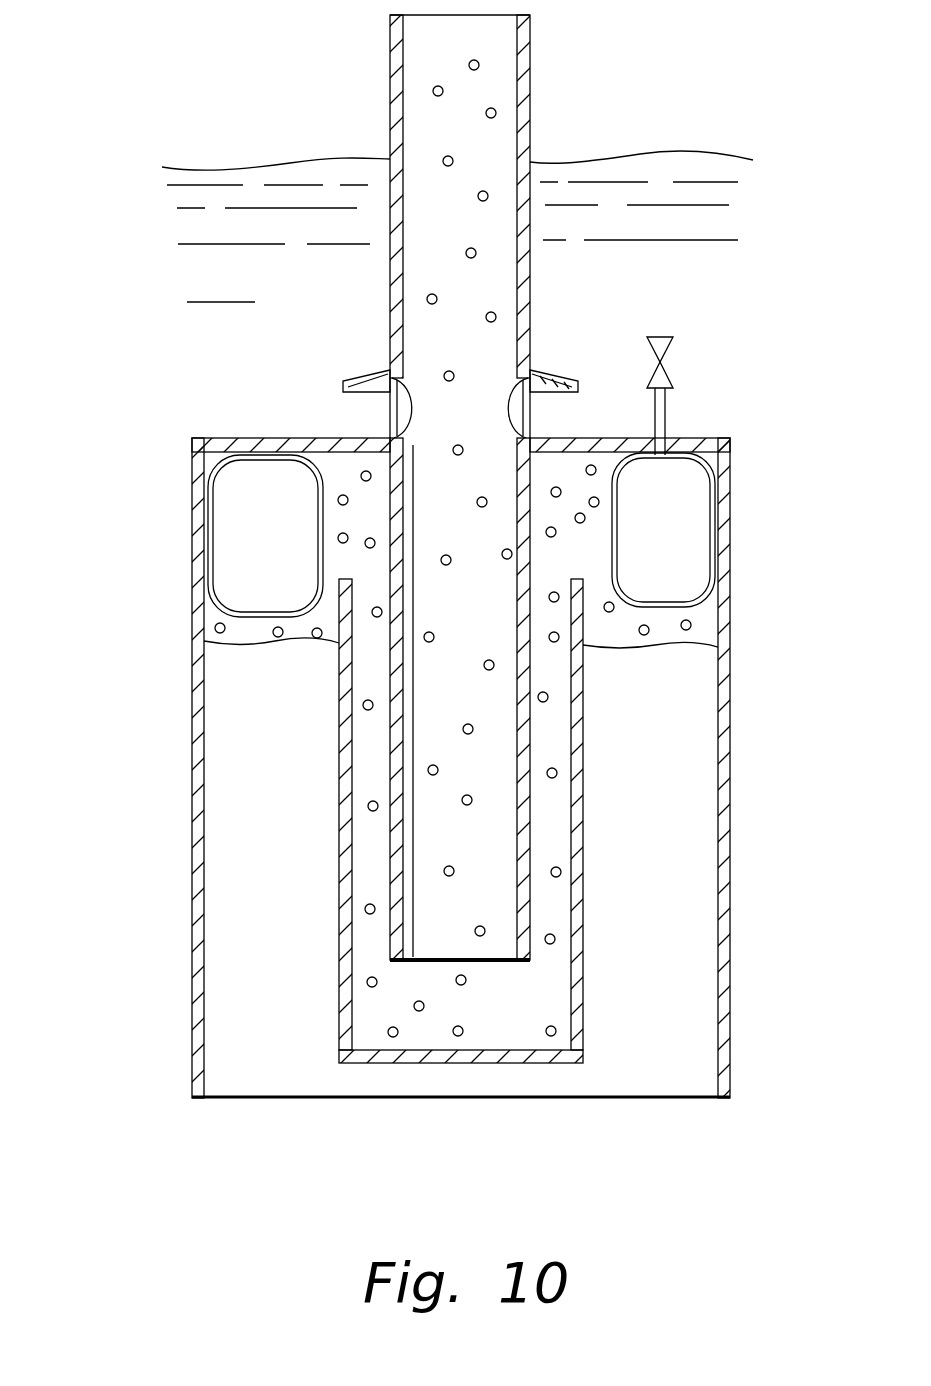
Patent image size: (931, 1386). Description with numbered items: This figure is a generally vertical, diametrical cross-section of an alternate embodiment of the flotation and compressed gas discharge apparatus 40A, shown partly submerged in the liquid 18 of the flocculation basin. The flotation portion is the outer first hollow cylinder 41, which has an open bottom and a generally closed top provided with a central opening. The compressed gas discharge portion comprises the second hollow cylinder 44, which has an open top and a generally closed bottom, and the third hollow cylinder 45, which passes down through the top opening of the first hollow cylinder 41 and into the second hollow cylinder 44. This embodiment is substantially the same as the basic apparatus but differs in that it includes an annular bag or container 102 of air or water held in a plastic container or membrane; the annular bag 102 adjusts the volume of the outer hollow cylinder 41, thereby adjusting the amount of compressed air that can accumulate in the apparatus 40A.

The liquid 18 is at (320, 159).
The flotation and compressed gas discharge apparatus 40A is at (677, 283).
The first hollow cylinder 41 is at (197, 765).
The second hollow cylinder 44 is at (583, 788).
The third hollow cylinder 45 is at (390, 770).
The annular bag or container 102 is at (265, 588).